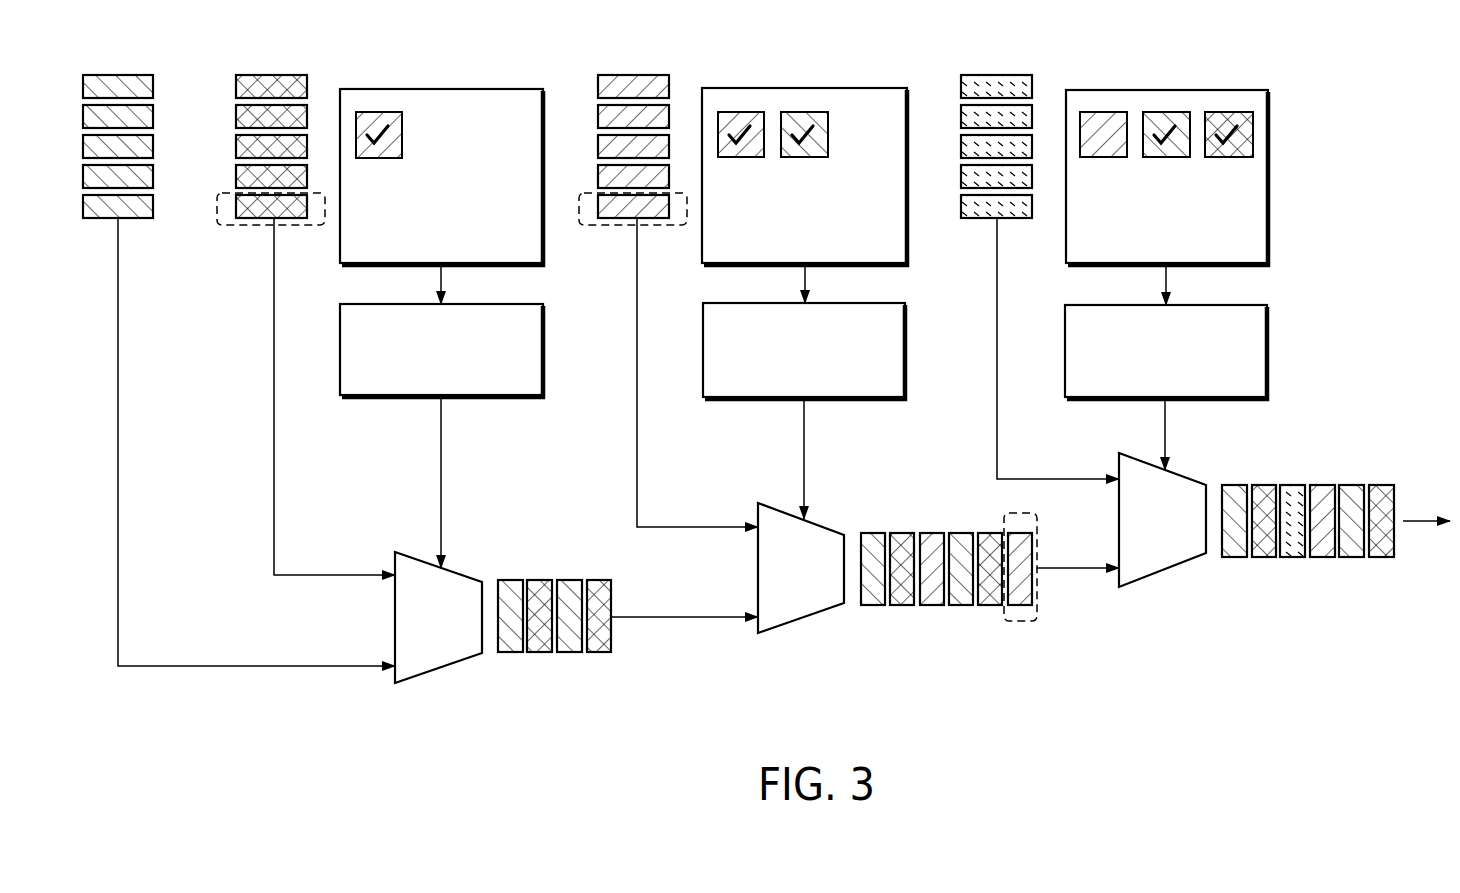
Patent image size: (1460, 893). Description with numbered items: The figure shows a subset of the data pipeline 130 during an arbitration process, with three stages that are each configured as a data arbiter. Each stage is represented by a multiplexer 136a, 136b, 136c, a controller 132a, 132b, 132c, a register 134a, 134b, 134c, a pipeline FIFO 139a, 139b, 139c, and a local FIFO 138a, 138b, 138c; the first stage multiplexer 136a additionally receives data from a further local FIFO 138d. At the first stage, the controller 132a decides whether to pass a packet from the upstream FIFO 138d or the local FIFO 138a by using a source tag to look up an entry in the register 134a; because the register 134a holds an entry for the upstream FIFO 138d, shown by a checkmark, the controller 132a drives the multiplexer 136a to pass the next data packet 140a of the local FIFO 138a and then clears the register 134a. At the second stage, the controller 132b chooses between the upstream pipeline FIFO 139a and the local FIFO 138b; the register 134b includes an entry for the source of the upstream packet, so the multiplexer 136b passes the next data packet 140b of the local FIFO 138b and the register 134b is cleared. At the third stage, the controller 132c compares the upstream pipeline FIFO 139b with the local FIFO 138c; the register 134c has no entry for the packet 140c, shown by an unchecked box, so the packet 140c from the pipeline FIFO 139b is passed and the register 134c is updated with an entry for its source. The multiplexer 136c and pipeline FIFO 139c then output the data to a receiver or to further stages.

The data pipeline 130 is at (388, 732).
The controller 132a is at (416, 371).
The controller 132b is at (779, 371).
The controller 132c is at (1141, 371).
The register 134a is at (416, 236).
The register 134b is at (779, 236).
The register 134c is at (1141, 236).
The multiplexer 136a is at (413, 644).
The multiplexer 136b is at (775, 598).
The multiplexer 136c is at (1137, 546).
The local FIFO 138a is at (274, 73).
The local FIFO 138b is at (633, 73).
The local FIFO 138c is at (990, 73).
The local FIFO 138d is at (118, 73).
The pipeline FIFO 139a is at (566, 653).
The pipeline FIFO 139b is at (929, 606).
The pipeline FIFO 139c is at (1290, 558).
The data packet 140a is at (254, 226).
The data packet 140b is at (614, 226).
The data packet 140c is at (1008, 516).